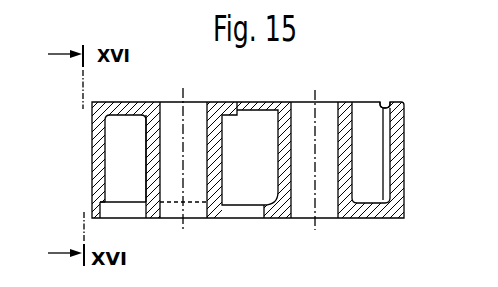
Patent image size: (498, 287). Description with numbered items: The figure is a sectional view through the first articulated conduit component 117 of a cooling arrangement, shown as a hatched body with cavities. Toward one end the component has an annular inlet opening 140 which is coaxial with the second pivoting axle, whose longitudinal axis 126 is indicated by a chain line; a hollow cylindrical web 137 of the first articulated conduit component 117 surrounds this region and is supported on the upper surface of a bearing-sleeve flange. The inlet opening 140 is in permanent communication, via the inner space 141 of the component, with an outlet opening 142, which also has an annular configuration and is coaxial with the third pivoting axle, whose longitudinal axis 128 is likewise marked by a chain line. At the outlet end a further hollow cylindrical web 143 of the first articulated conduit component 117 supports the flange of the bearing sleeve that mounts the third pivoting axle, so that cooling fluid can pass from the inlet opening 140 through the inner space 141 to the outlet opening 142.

The first articulated conduit component 117 is at (89, 129).
The inner space 141 is at (117, 146).
The hollow cylindrical web 137 is at (147, 171).
The annular inlet opening 140 is at (108, 196).
The outlet opening 142 is at (382, 106).
The hollow cylindrical web 143 is at (356, 128).
The longitudinal axis 126 is at (183, 230).
The longitudinal axis 128 is at (315, 230).